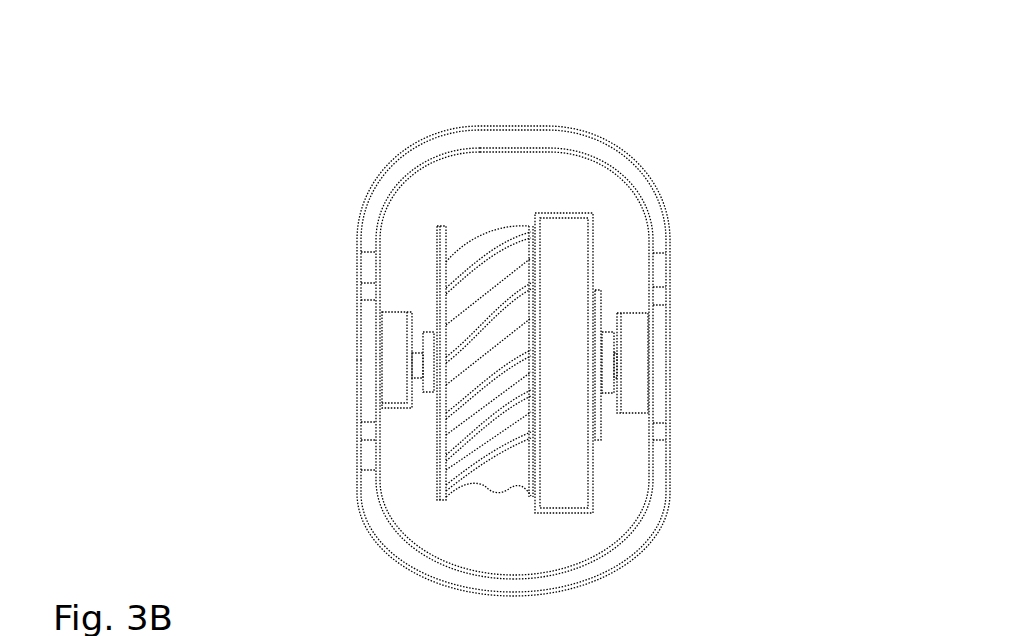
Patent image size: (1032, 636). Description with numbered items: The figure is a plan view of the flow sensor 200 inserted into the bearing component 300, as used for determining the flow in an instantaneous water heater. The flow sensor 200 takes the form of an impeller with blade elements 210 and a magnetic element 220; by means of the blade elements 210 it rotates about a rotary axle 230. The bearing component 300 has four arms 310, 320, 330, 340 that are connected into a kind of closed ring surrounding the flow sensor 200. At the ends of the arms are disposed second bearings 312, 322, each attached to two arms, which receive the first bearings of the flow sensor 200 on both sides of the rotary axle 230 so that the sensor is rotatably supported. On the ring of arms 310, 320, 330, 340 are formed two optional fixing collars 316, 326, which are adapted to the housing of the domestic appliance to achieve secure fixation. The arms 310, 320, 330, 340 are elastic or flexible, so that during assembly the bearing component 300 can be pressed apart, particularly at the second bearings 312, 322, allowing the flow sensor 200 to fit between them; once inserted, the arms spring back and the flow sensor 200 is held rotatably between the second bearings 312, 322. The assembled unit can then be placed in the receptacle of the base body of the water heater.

The flow sensor 200 is at (489, 202).
The blade elements 210 is at (478, 243).
The magnetic element 220 is at (567, 345).
The rotary axle 230 is at (338, 364).
The bearing component 300 is at (672, 131).
The arm 310 is at (378, 495).
The second bearing 312 is at (418, 355).
The fixing collar 316 is at (393, 323).
The arm 320 is at (628, 537).
The second bearing 322 is at (613, 365).
The fixing collar 326 is at (632, 352).
The arm 330 is at (447, 145).
The arm 340 is at (653, 207).